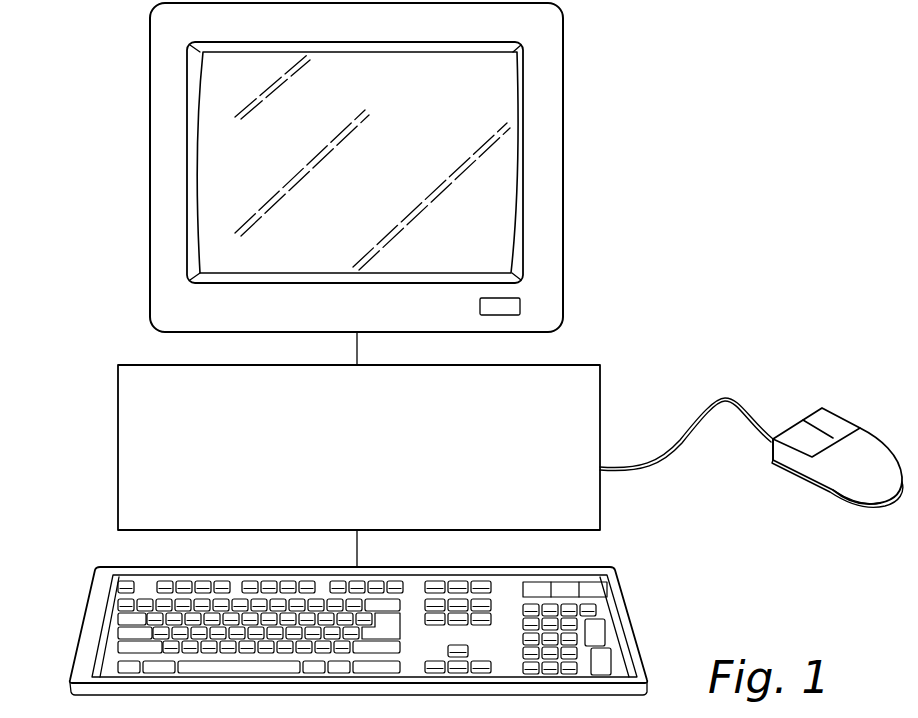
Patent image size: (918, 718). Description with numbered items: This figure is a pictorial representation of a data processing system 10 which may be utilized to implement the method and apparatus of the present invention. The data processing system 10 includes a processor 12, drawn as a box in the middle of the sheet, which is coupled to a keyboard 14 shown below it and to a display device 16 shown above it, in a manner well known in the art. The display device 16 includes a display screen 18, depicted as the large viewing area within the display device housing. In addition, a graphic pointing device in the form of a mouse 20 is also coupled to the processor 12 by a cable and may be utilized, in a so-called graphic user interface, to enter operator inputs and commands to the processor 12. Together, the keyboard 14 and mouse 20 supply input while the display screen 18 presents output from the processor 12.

The data processing system 10 is at (710, 302).
The processor 12 is at (600, 385).
The keyboard 14 is at (626, 604).
The display device 16 is at (563, 200).
The display screen 18 is at (500, 113).
The mouse 20 is at (830, 488).